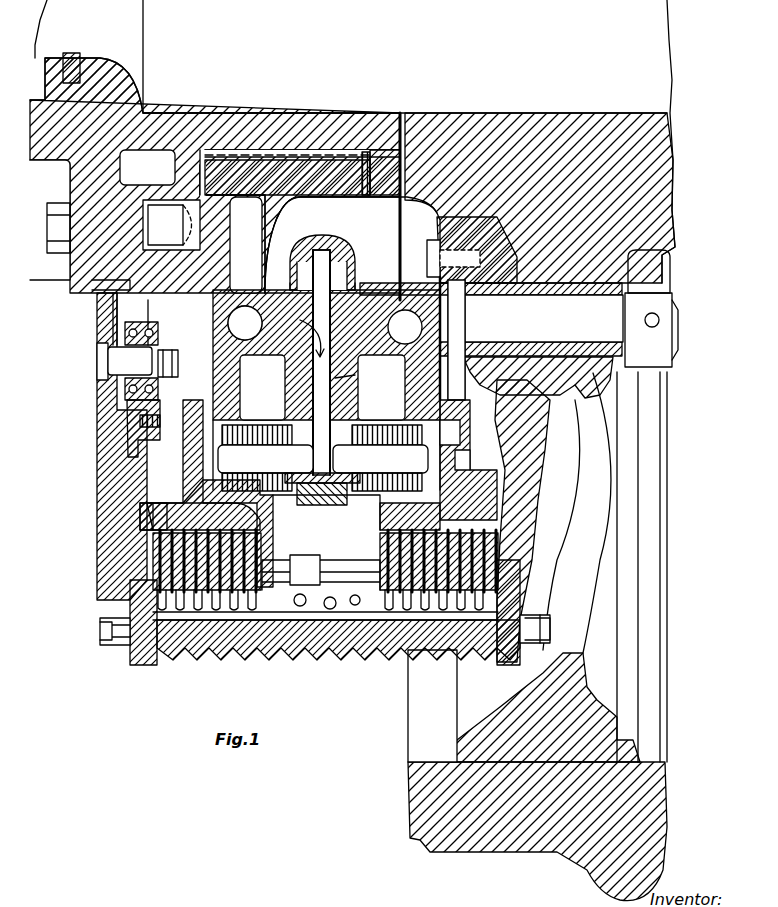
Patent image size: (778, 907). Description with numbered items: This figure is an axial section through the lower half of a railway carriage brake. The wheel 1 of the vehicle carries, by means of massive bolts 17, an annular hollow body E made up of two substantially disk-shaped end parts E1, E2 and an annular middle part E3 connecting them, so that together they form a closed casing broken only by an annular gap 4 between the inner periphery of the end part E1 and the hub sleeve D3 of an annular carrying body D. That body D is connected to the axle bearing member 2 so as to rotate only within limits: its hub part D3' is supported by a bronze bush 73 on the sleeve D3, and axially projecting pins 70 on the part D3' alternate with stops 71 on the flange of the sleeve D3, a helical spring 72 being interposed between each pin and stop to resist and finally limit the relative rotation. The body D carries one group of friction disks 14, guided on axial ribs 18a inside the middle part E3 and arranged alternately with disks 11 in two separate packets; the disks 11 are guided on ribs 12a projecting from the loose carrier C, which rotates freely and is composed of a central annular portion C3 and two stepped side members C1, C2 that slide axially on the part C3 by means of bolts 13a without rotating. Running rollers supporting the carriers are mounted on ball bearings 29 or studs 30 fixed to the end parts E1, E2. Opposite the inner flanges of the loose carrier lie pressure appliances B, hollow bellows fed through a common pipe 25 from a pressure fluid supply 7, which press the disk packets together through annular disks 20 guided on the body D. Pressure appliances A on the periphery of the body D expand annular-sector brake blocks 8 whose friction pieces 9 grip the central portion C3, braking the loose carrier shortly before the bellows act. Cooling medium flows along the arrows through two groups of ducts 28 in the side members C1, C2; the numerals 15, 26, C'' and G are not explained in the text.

The wheel 1 is at (430, 788).
The axle bearing member 2 is at (75, 258).
The annular gap 4 is at (112, 300).
The pressure fluid supply 7 is at (245, 323).
The brake blocks 8 is at (275, 640).
The friction pieces 9 is at (330, 580).
The friction disks 11 is at (188, 522).
The ribs or ledges 12a is at (150, 535).
The bolts 13a is at (298, 640).
The friction disks 14 is at (185, 640).
The passage 15 is at (265, 520).
The massive bolts 17 is at (582, 325).
The ribs or ledges 18a is at (332, 650).
The annular disks 20 is at (455, 360).
The common pipe 25 is at (358, 372).
The bearing 26 is at (143, 361).
The cooling ducts 28 is at (235, 622).
The ball bearings 29 is at (128, 405).
The studs 30 is at (100, 362).
The pins 70 is at (155, 215).
The stops 71 is at (150, 325).
The helical spring 72 is at (92, 286).
The bronze bush 73 is at (345, 155).
The pressure appliances A is at (308, 650).
The pressure appliances (bellows) B is at (252, 425).
The loose carrier C is at (116, 516).
The clutch passage C'' is at (206, 493).
The side member C1 is at (208, 523).
The side member C2 is at (474, 510).
The central annular portion C3 is at (394, 694).
The annular body D is at (225, 312).
The hub sleeve member D3 is at (215, 175).
The hub part D3' is at (287, 128).
The annular hollow body E is at (132, 655).
The disk-shaped end part E1 is at (97, 408).
The disk-shaped end part E2 is at (548, 470).
The annular middle part E3 is at (338, 662).
The gear G is at (362, 650).